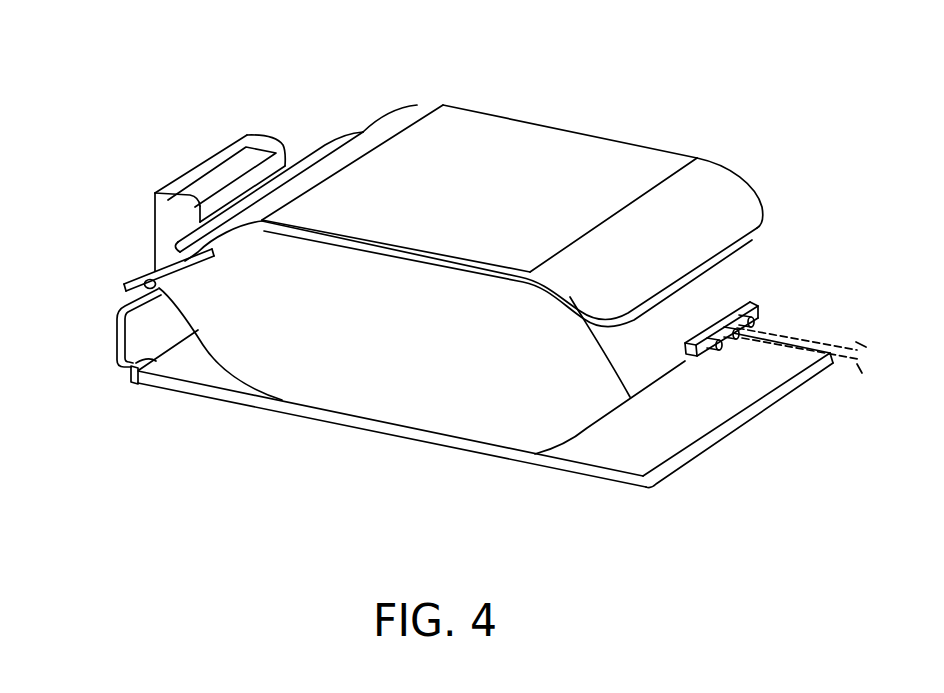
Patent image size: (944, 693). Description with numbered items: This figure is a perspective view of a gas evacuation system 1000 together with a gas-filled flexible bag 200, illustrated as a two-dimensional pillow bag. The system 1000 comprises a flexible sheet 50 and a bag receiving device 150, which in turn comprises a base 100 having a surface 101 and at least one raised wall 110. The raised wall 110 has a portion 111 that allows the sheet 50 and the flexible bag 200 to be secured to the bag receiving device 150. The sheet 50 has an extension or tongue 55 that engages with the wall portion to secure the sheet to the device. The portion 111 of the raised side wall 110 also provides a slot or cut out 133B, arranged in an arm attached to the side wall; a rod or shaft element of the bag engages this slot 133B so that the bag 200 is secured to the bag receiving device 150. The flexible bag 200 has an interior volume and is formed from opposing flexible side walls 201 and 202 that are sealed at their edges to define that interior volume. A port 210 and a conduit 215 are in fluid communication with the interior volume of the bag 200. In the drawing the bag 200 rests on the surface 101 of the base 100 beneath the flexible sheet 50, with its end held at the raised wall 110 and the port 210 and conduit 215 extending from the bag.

The system 1000 is at (168, 95).
The tongue 55 is at (250, 180).
The portion 111 is at (200, 165).
The slot 133B is at (157, 235).
The flexible sheet 50 is at (496, 200).
The flexible side wall 201 is at (760, 250).
The port 210 is at (738, 308).
The conduit 215 is at (847, 360).
The bag receiving device 150 is at (91, 329).
The raised wall 110 is at (120, 350).
The surface 101 is at (132, 372).
The flexible side wall 202 is at (222, 370).
The base 100 is at (310, 410).
The flexible bag 200 is at (522, 368).